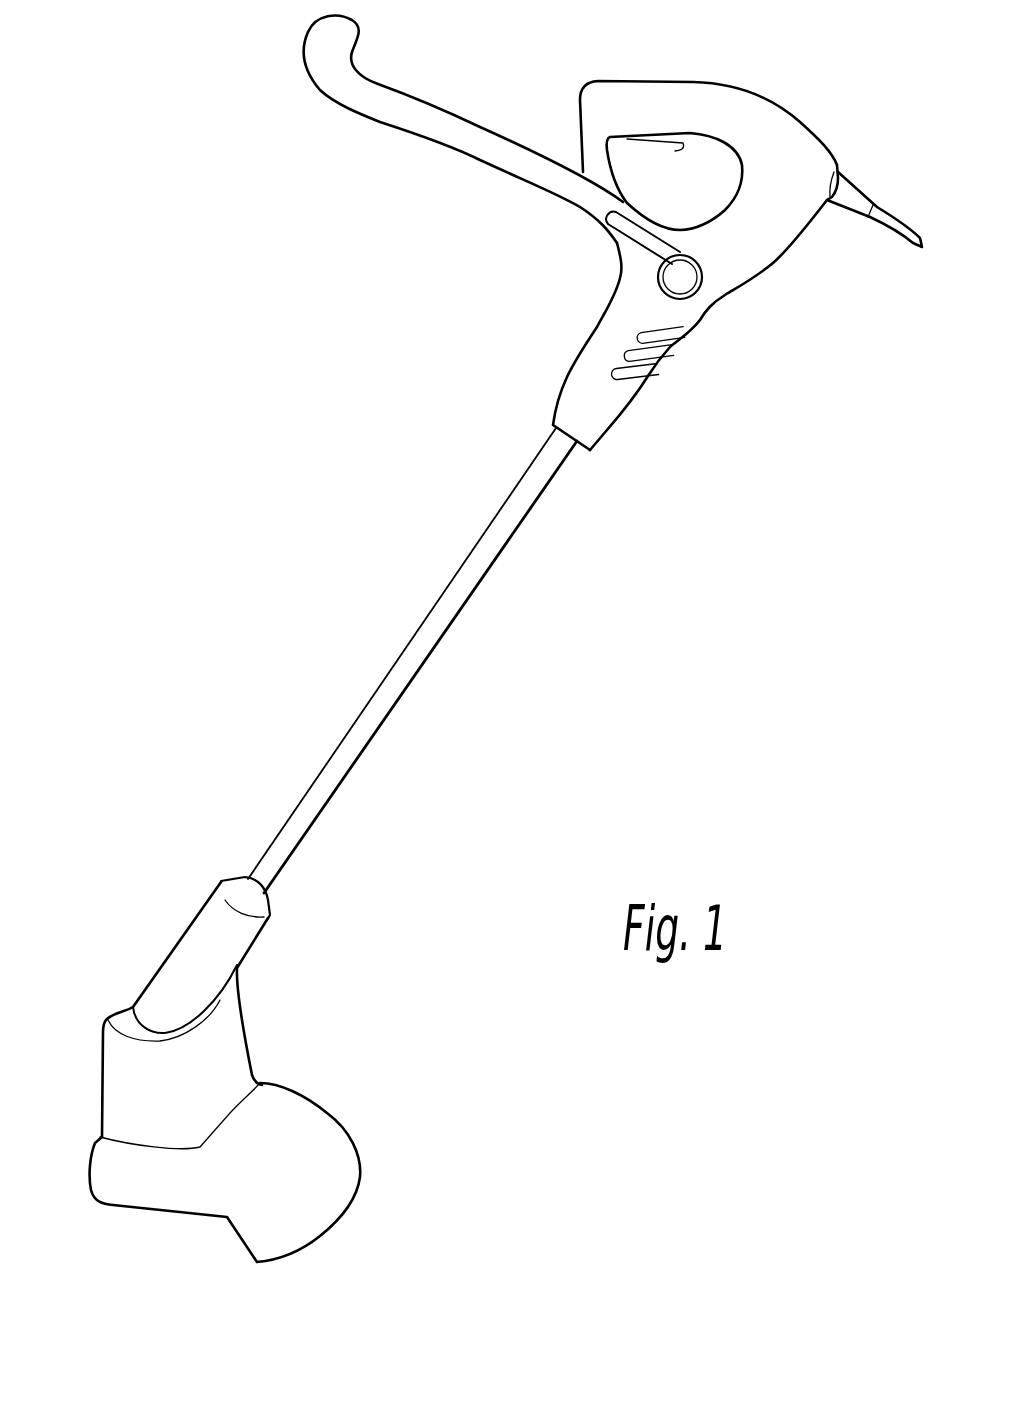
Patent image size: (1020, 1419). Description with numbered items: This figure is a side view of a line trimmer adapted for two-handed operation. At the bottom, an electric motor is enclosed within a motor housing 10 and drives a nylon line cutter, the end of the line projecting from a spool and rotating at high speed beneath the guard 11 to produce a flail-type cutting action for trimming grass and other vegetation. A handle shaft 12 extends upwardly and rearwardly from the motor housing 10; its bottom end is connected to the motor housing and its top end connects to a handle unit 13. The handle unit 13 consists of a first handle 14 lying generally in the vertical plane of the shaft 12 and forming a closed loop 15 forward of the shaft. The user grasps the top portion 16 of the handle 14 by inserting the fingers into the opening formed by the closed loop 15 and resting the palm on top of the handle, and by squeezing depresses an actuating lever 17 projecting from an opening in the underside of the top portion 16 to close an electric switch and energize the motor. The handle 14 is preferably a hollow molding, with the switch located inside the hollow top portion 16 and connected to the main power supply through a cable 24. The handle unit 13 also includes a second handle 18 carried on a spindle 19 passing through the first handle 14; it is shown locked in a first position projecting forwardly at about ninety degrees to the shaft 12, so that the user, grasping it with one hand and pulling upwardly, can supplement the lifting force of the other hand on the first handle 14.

The motor housing 10 is at (130, 1095).
The guard 11 is at (317, 1140).
The handle shaft 12 is at (475, 581).
The handle unit 13 is at (573, 315).
The first handle 14 is at (763, 237).
The closed loop 15 is at (717, 163).
The top portion 16 is at (677, 113).
The actuating lever 17 is at (667, 141).
The second handle 18 is at (403, 117).
The spindle 19 is at (683, 280).
The cable 24 is at (860, 197).